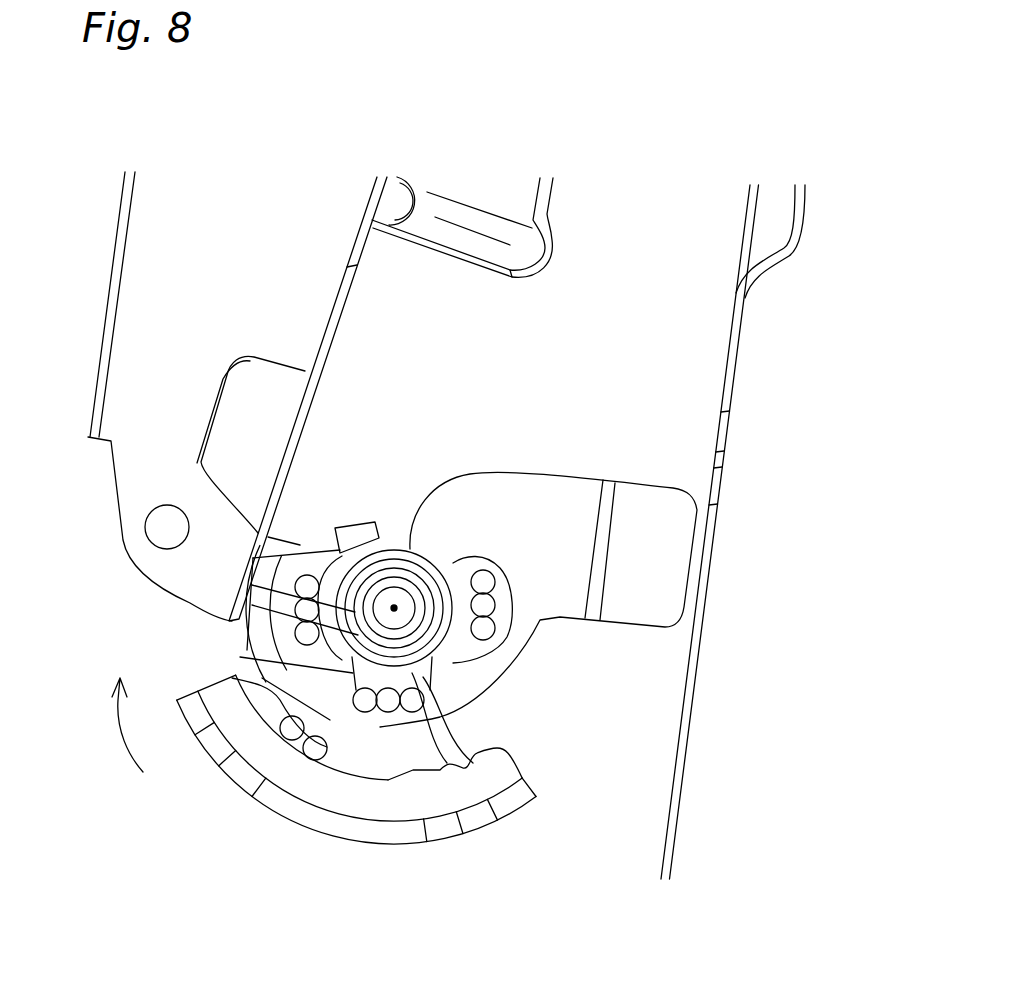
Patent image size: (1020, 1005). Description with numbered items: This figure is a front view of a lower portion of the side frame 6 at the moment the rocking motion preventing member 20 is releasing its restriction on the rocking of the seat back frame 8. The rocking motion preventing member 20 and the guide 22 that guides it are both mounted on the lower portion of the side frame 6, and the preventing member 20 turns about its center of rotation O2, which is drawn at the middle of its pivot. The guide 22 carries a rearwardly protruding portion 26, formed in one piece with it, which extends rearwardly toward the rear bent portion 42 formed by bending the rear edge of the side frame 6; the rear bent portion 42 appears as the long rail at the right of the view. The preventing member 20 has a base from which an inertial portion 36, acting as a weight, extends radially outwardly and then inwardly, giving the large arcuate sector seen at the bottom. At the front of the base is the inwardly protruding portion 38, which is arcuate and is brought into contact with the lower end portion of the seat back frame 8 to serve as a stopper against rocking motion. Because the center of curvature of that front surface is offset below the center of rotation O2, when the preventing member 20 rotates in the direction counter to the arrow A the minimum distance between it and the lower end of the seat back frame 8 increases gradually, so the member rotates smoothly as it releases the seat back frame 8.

The side frame 6 is at (722, 494).
The seat back frame 8 is at (152, 328).
The rocking motion preventing member 20 is at (325, 793).
The guide 22 is at (475, 547).
The rearwardly protruding portion 26 is at (640, 513).
The inertial portion 36 is at (520, 797).
The inwardly protruding portion 38 is at (276, 535).
The rear bent portion 42 is at (697, 647).
The center of rotation O2 is at (394, 608).
The arrow A is at (118, 729).